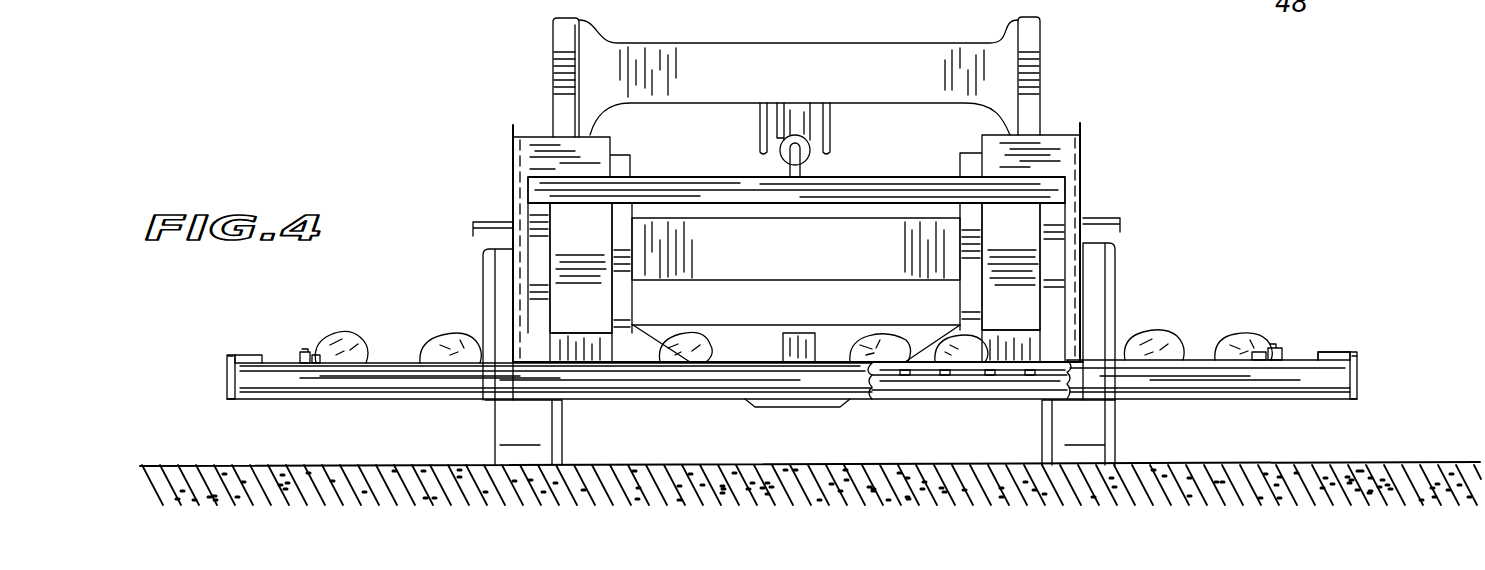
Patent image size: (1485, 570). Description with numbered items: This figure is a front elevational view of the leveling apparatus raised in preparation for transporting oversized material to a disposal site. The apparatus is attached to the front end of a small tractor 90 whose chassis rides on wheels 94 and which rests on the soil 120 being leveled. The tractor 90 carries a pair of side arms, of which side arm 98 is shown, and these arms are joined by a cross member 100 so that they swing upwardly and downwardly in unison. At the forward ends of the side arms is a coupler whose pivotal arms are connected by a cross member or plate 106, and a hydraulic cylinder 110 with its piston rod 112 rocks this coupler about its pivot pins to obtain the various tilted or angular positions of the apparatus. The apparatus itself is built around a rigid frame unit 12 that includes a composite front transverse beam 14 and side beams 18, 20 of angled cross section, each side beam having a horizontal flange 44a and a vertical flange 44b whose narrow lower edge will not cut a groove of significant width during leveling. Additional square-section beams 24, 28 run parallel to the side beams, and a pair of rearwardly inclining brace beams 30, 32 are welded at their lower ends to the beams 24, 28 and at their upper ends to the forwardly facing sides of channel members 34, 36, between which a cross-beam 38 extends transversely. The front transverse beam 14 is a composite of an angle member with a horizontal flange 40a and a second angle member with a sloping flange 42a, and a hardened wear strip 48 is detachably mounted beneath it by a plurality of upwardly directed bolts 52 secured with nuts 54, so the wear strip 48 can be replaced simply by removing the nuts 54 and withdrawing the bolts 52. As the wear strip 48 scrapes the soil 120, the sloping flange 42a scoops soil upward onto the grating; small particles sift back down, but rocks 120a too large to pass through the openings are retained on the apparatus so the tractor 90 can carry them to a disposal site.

The tractor 90 is at (512, 90).
The side arm 98 is at (553, 40).
The cross member 100 is at (880, 40).
The hydraulic cylinder 110 is at (792, 112).
The piston rod 112 is at (805, 160).
The channel member 36 is at (535, 137).
The channel member 34 is at (1060, 137).
The cross-beam 38 is at (918, 180).
The brace beam 32 is at (555, 259).
The brace beam 30 is at (1037, 252).
The cross member or plate 106 is at (796, 284).
The additional beam 28 is at (580, 340).
The additional beam 24 is at (1014, 344).
The bolt 52 is at (684, 336).
The nut 54 is at (714, 348).
The wheels 94 is at (486, 274).
The front transverse beam 14 is at (396, 356).
The sloping flange 42a is at (282, 365).
The wear strip 48 is at (324, 392).
The horizontal flange 40a is at (1214, 388).
The horizontal flange 44a is at (250, 355).
The vertical flange 44b is at (227, 380).
The side beam 20 is at (229, 354).
The side beam 18 is at (1365, 362).
The frame unit 12 is at (1331, 329).
The rocks 120a is at (336, 332).
The soil 120 is at (162, 466).